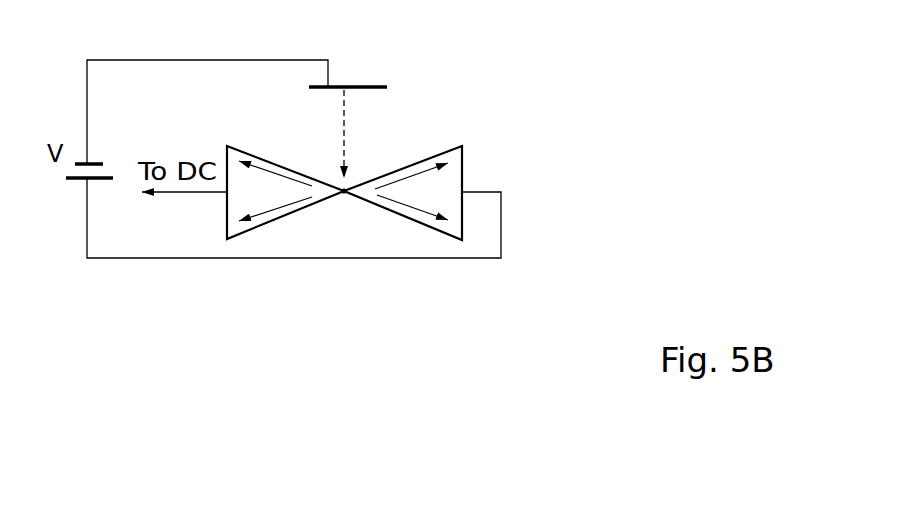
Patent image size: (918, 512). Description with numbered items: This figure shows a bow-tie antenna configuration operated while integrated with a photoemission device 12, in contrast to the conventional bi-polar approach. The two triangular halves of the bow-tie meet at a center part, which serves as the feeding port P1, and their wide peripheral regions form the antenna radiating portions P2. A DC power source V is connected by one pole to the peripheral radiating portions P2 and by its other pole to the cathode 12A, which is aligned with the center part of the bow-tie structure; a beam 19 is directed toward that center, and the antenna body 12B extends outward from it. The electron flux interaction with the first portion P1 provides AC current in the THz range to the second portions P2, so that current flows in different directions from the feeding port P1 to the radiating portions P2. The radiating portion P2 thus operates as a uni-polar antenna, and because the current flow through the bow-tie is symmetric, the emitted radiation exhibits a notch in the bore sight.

The photoemission device 12 is at (445, 124).
The cathode 12A is at (368, 86).
The deflector prism pair 12B is at (468, 160).
The incident light beam 19 is at (343, 138).
The feeding port P1 is at (344, 193).
The antenna radiating portion P2 is at (272, 211).